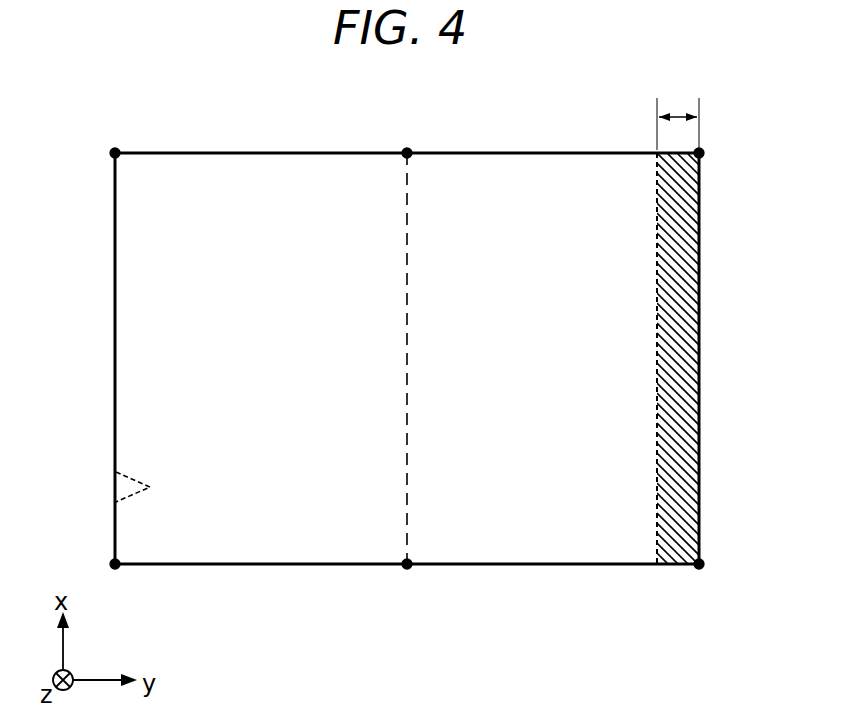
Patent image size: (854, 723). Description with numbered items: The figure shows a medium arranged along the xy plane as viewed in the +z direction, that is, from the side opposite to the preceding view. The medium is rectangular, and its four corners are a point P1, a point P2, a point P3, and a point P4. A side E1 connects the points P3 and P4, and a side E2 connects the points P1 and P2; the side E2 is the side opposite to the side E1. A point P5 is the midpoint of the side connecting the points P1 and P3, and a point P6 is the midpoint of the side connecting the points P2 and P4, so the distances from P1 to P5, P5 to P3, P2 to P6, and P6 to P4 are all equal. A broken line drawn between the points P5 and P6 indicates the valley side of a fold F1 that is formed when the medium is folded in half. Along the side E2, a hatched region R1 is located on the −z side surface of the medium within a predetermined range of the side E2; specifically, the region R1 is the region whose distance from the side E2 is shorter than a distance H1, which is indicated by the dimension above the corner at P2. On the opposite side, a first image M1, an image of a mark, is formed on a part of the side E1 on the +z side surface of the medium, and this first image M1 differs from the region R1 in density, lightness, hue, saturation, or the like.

The point P1 is at (701, 568).
The point P2 is at (703, 151).
The point P3 is at (118, 568).
The point P4 is at (117, 150).
The point P5 is at (410, 568).
The point P6 is at (407, 150).
The side E1 is at (114, 370).
The side E2 is at (700, 397).
The region R1 is at (686, 290).
The distance H1 is at (678, 114).
The fold F1 is at (409, 357).
The first image M1 is at (111, 488).